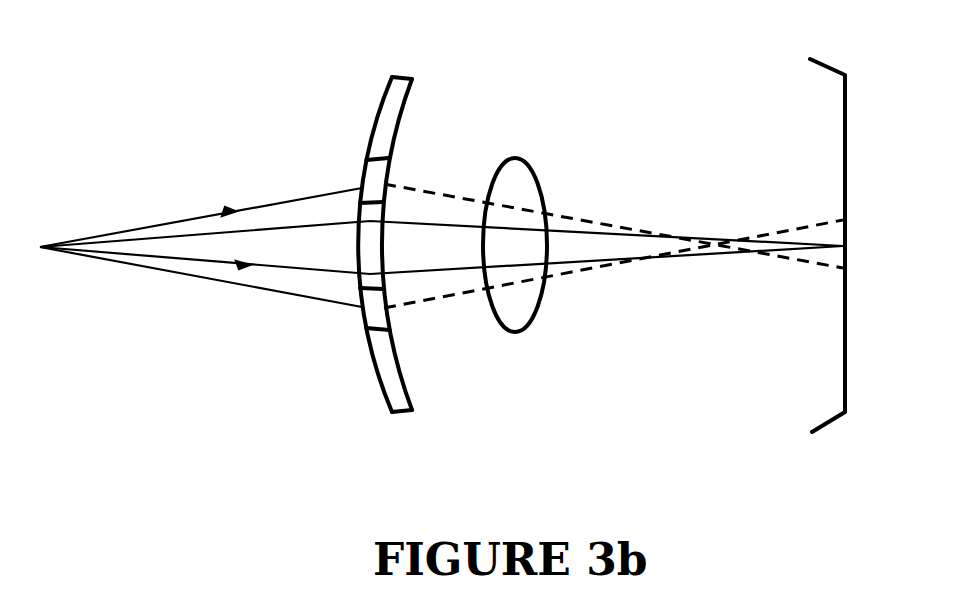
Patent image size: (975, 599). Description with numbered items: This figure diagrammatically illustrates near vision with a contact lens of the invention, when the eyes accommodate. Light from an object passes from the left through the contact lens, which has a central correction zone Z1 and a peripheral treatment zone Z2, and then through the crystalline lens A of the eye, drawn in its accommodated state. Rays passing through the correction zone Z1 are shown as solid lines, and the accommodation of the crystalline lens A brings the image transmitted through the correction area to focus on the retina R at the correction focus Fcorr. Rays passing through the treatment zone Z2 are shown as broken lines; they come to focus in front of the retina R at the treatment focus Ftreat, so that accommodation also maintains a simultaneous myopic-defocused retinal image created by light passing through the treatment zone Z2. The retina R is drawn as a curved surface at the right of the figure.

The retina R is at (828, 123).
The crystalline lens A is at (538, 313).
The correction zone Z1 is at (333, 212).
The treatment zone Z2 is at (347, 195).
The treatment focus Ftreat is at (741, 293).
The correction focus Fcorr is at (897, 249).